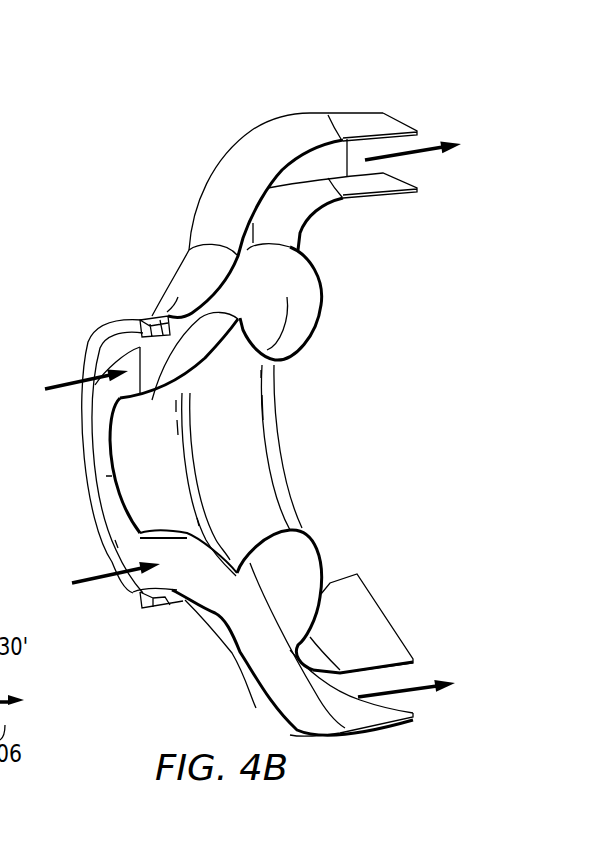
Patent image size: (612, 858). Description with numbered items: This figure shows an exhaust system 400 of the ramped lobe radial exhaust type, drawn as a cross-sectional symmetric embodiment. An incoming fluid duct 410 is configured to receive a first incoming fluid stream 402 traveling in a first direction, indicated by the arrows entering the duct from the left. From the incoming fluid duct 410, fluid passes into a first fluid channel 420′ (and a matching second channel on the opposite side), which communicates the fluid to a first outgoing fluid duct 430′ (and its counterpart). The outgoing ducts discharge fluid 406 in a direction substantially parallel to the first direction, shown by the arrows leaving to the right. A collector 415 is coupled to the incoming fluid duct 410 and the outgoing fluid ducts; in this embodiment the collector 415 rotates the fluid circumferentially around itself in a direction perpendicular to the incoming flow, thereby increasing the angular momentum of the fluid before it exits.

The exhaust system 400 is at (305, 83).
The first incoming fluid stream 402 is at (78, 378).
The discharged fluid 406 is at (425, 156).
The incoming fluid duct 410 is at (102, 477).
The collector 415 is at (246, 410).
The first fluid channel 420′ is at (218, 157).
The first outgoing fluid duct 430′ is at (404, 121).